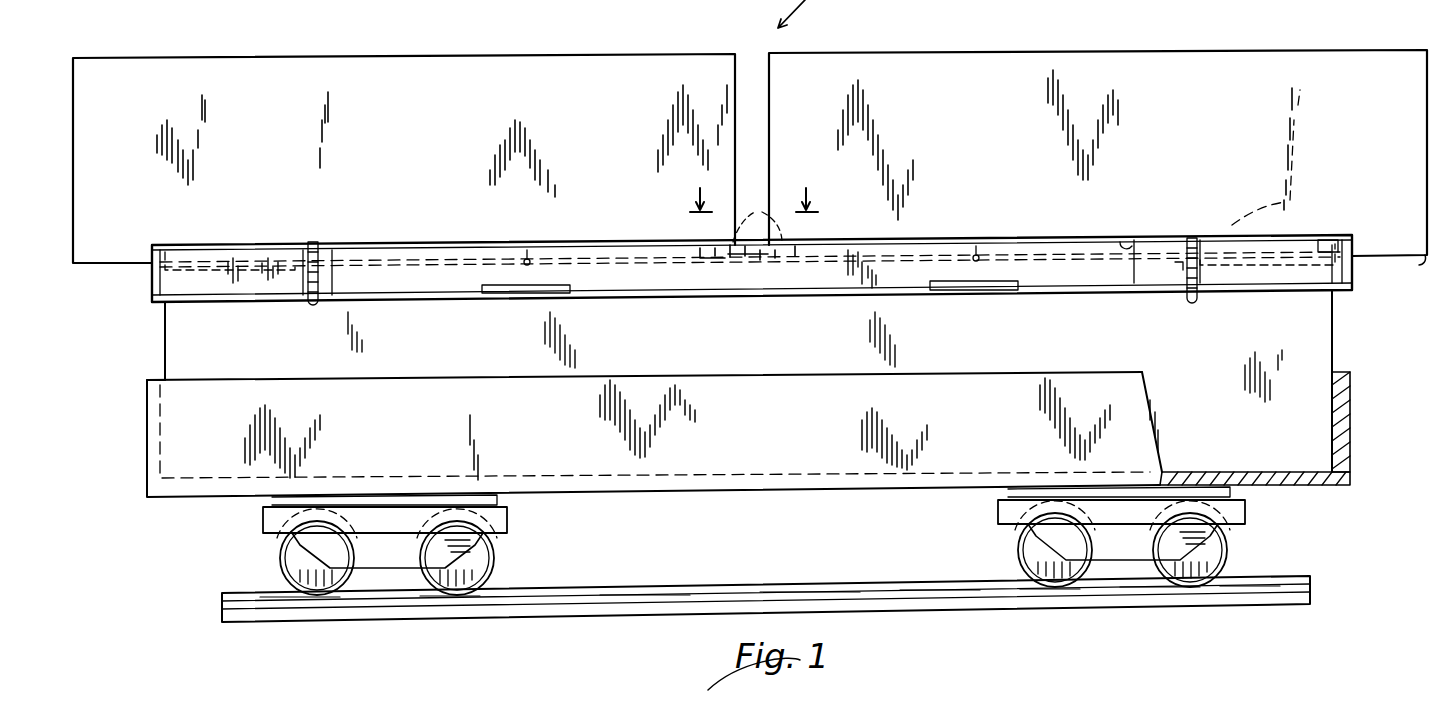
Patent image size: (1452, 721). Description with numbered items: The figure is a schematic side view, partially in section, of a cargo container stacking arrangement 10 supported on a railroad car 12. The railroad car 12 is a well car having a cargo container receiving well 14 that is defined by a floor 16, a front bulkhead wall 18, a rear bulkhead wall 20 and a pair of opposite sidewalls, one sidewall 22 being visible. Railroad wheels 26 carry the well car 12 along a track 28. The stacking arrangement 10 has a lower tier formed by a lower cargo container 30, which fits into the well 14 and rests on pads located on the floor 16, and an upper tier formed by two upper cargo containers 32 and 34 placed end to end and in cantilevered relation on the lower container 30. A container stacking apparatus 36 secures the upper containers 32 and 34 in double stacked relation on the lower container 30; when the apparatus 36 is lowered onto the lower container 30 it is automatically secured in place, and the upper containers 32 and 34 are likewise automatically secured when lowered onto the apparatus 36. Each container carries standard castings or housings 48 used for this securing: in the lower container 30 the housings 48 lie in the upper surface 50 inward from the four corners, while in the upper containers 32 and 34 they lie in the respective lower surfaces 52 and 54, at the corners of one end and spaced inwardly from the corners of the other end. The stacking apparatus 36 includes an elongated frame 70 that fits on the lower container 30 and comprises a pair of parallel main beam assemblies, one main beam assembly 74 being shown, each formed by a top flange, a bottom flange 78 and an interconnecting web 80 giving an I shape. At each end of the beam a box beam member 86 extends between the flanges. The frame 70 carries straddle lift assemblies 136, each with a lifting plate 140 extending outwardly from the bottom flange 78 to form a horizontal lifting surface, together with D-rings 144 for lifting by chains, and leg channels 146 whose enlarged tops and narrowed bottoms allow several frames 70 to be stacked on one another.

The cargo container stacking arrangement 10 is at (712, 185).
The railroad car 12 is at (686, 503).
The cargo container receiving well 14 is at (1335, 372).
The floor 16 is at (1276, 470).
The front bulkhead wall 18 is at (1351, 372).
The rear bulkhead wall 20 is at (150, 380).
The sidewall 22 is at (1118, 404).
The railroad wheels 26 is at (395, 568).
The track 28 is at (830, 586).
The lower cargo container 30 is at (165, 331).
The upper cargo container 32 is at (1175, 50).
The upper cargo container 34 is at (600, 40).
The container stacking apparatus 36 is at (1355, 290).
The housings 48 is at (284, 254).
The upper surface 50 is at (699, 264).
The lower surface 52 is at (1362, 281).
The lower surface 54 is at (108, 265).
The elongated frame 70 is at (611, 243).
The main beam assembly 74 is at (778, 303).
The bottom flange 78 is at (626, 300).
The web 80 is at (855, 274).
The box beam member 86 is at (392, 245).
The straddle lift assembly 136 is at (501, 306).
The lifting plate 140 is at (1195, 304).
The D-rings 144 is at (528, 250).
The leg channels 146 is at (312, 304).